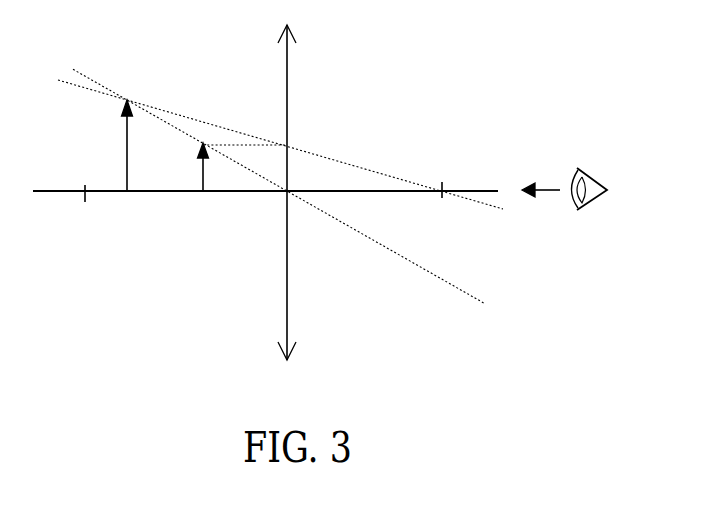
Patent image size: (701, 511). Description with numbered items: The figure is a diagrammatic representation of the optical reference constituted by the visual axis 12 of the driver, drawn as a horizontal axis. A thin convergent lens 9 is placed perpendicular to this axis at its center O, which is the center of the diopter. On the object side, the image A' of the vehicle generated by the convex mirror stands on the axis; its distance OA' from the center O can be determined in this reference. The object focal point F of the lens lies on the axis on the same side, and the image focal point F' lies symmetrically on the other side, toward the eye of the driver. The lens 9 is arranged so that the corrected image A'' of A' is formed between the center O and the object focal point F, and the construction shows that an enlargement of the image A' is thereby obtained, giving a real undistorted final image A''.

The lens 9 is at (287, 80).
The visual axis 12 is at (353, 190).
The corrected image A'' is at (105, 145).
The image of the object A' is at (180, 167).
The object focal point F is at (62, 212).
The image focal point F' is at (419, 207).
The center of the diopter O is at (275, 202).